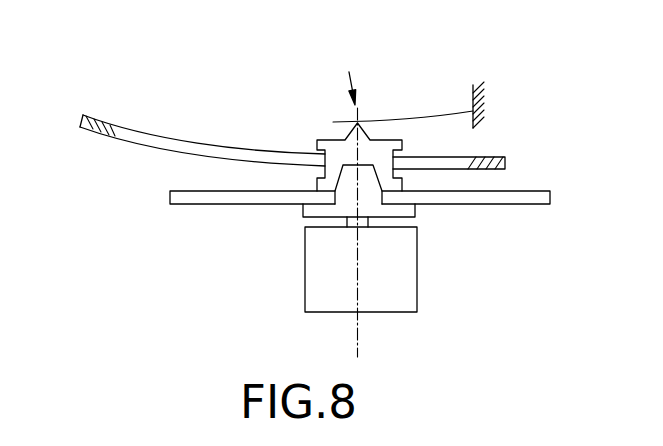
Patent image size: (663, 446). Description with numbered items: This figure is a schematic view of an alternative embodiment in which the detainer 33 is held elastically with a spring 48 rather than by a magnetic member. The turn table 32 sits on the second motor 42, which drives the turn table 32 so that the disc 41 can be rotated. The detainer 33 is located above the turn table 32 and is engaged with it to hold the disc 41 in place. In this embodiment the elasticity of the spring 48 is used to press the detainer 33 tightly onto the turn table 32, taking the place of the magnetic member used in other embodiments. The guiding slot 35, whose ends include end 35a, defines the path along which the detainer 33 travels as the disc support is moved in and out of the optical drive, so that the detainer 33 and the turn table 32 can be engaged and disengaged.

The turn table 32 is at (312, 209).
The detainer 33 is at (324, 140).
The guiding slot 35 is at (167, 142).
The end of guiding slot 35a is at (97, 121).
The disc 41 is at (532, 190).
The second motor 42 is at (304, 267).
The spring 48 is at (414, 116).